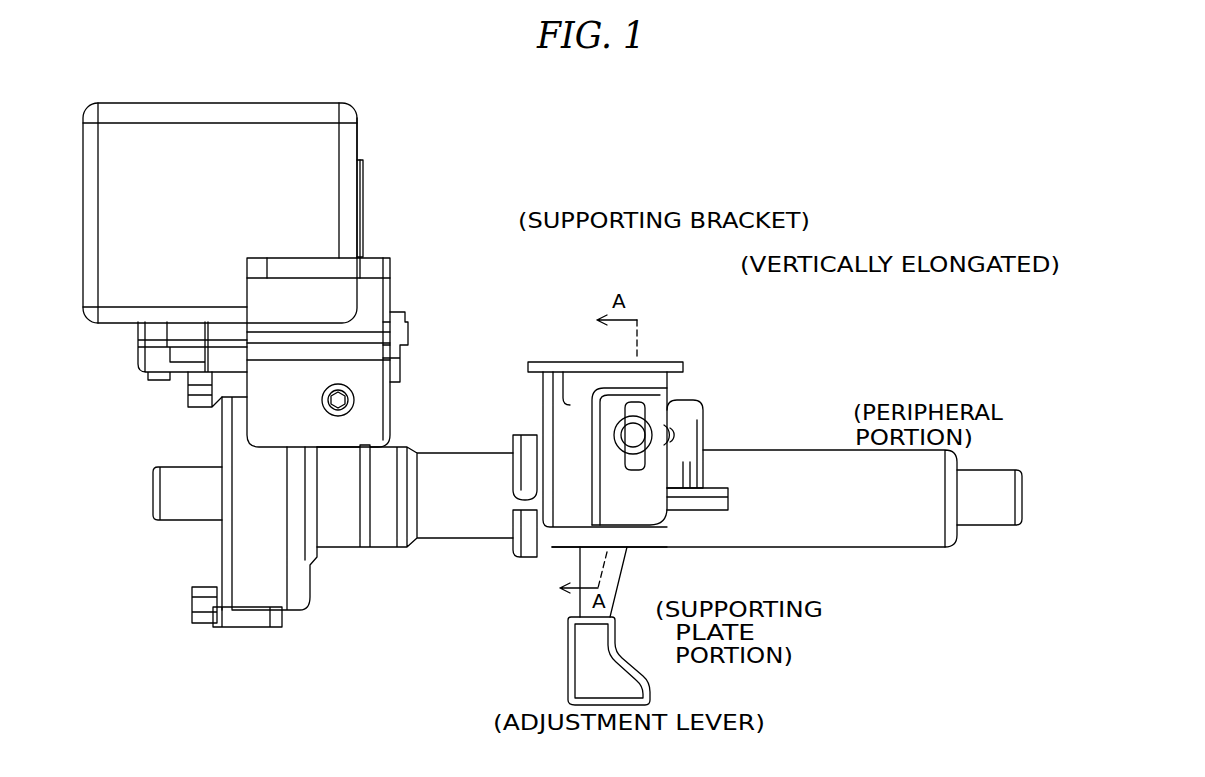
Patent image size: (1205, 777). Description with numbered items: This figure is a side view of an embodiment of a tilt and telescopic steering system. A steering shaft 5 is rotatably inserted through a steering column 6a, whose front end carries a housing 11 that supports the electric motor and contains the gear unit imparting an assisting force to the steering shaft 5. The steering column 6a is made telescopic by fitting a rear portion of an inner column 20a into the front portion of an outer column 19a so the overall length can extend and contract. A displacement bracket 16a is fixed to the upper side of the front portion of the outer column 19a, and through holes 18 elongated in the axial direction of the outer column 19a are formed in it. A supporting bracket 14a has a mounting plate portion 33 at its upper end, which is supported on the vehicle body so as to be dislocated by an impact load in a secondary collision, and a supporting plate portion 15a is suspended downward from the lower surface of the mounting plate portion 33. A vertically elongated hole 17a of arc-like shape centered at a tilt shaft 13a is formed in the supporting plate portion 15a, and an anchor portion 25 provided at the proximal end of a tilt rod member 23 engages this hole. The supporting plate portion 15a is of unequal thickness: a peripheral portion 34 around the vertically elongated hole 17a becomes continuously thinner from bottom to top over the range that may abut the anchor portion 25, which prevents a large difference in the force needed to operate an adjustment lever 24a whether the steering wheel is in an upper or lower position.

The steering shaft 5 is at (980, 487).
The steering column 6a is at (862, 550).
The housing 11 is at (258, 547).
The tilt shaft 13a is at (340, 396).
The supporting bracket 14a is at (599, 396).
The supporting plate portion 15a is at (650, 510).
The displacement bracket 16a is at (825, 451).
The vertically elongated hole 17a is at (640, 402).
The through hole 18 is at (688, 440).
The outer column 19a is at (863, 533).
The inner column 20a is at (467, 523).
The tilt rod member 23 is at (630, 438).
The adjustment lever 24a is at (595, 683).
The anchor portion 25 is at (646, 430).
The mounting plate portion 33 is at (645, 362).
The peripheral portion 34 is at (647, 457).